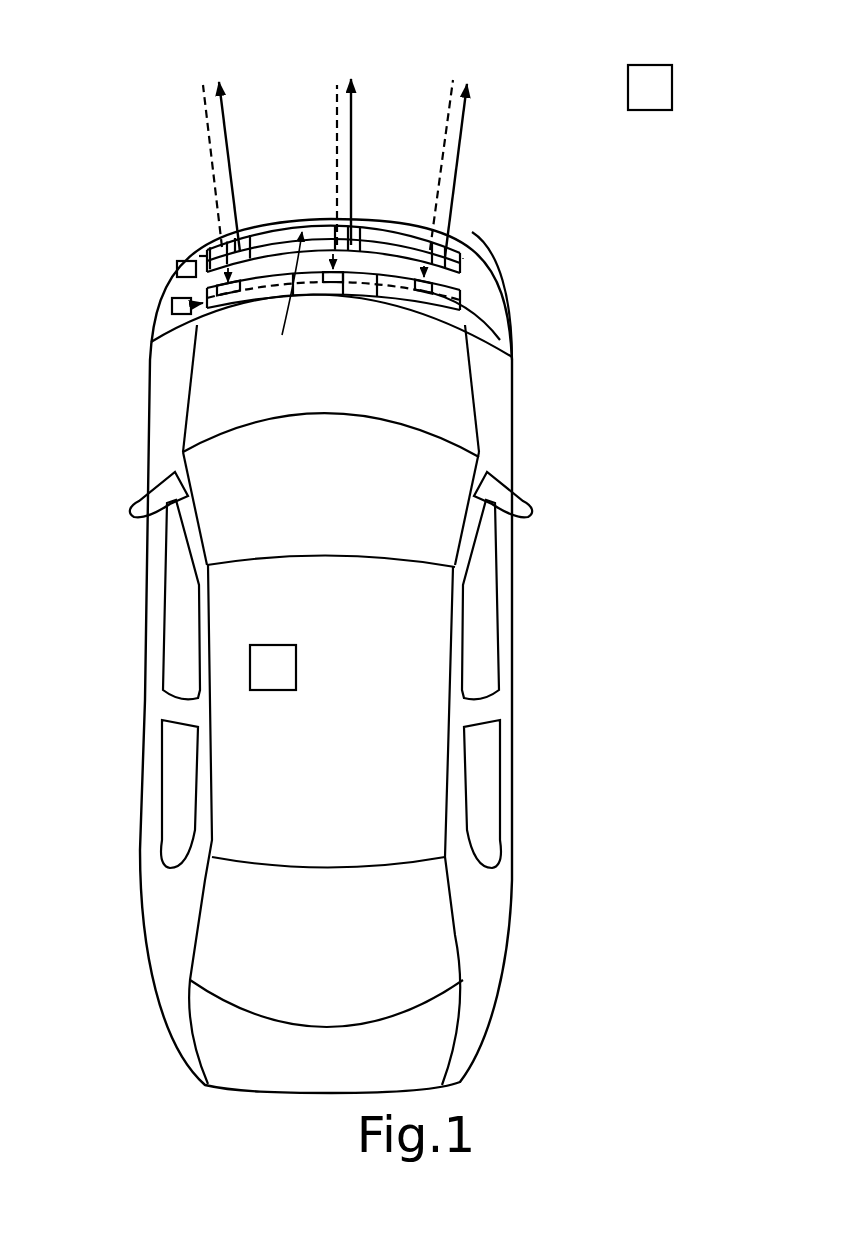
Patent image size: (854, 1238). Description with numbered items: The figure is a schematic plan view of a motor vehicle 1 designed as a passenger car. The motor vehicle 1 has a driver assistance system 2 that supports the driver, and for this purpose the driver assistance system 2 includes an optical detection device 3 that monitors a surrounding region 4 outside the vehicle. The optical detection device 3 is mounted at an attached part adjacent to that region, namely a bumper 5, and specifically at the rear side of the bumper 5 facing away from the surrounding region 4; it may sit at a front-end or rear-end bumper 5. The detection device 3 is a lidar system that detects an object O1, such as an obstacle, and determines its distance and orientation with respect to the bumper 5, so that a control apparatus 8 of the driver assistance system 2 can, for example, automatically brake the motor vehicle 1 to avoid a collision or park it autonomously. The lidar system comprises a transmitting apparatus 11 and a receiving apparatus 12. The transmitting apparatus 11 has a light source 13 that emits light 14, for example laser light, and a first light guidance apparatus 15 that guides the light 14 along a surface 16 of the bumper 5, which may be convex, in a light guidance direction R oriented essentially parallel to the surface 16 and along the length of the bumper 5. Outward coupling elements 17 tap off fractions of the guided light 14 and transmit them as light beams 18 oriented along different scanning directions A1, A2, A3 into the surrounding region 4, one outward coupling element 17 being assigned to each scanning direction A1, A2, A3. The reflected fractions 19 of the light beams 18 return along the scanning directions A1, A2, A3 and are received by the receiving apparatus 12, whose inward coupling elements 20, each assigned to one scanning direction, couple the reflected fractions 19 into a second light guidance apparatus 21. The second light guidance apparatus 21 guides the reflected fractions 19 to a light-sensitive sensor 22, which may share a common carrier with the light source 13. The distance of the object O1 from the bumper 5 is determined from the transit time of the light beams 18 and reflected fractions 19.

The motor vehicle 1 is at (512, 805).
The driver assistance system 2 is at (385, 728).
The optical detection device 3 is at (368, 321).
The surrounding region 4 is at (66, 354).
The bumper 5 is at (497, 298).
The control apparatus 8 is at (270, 690).
The transmitting apparatus 11 is at (473, 273).
The receiving apparatus 12 is at (470, 310).
The light source 13 is at (177, 268).
The light 14 is at (200, 255).
The first light guidance apparatus 15 is at (395, 232).
The surface 16 is at (279, 298).
The outward coupling elements 17 is at (245, 246).
The light beams 18 is at (230, 148).
The reflected fractions 19 is at (206, 129).
The inward coupling elements 20 is at (243, 302).
The second light guidance apparatus 21 is at (372, 298).
The light-sensitive sensor 22 is at (172, 305).
The scanning direction A1 is at (219, 72).
The scanning direction A2 is at (351, 69).
The scanning direction A3 is at (467, 73).
The object O1 is at (672, 86).
The light guidance direction R is at (463, 258).